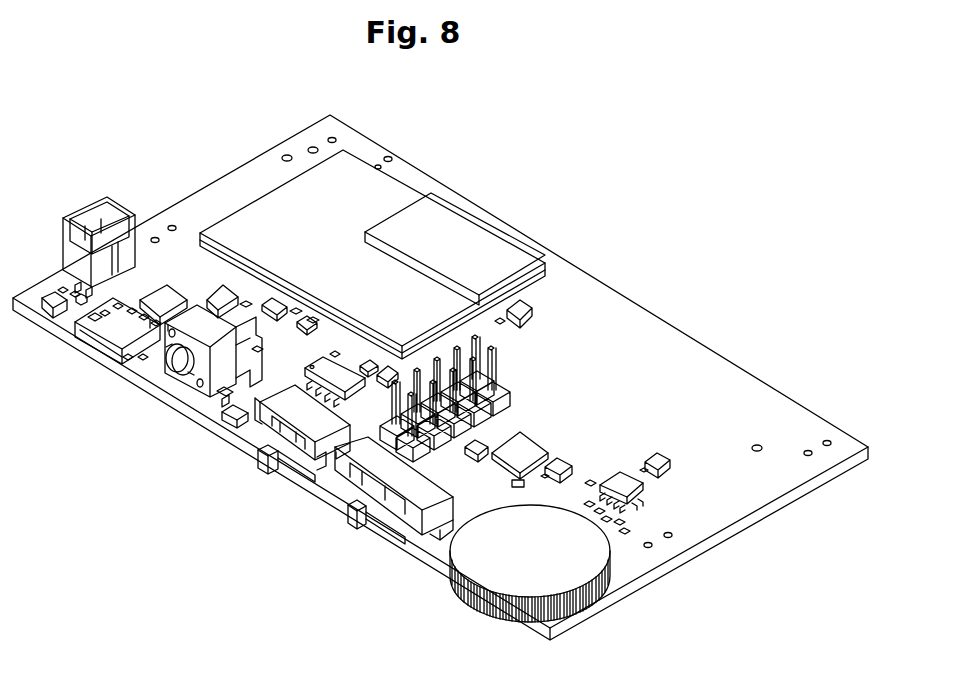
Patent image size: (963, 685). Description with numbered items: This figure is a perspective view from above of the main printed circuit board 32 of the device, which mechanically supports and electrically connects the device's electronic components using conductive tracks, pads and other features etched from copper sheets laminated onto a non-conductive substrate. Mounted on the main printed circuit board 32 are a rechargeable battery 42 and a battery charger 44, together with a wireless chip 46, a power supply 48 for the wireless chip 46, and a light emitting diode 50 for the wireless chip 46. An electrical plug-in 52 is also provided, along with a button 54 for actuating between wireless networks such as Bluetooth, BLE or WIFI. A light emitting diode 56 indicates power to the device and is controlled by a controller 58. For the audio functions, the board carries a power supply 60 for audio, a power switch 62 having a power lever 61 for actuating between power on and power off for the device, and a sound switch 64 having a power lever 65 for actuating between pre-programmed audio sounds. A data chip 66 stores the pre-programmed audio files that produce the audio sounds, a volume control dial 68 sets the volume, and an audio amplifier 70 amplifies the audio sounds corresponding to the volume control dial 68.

The main printed circuit board 32 is at (480, 195).
The rechargeable battery 42 is at (83, 210).
The battery charger 44 is at (175, 293).
The wireless chip 46 is at (292, 188).
The power supply for the wireless chip 48 is at (203, 285).
The light emitting diode for wireless chip 50 is at (43, 308).
The electrical plug-in 52 is at (103, 345).
The button 54 is at (182, 368).
The light emitting diode for indicating power 56 is at (227, 423).
The controller 58 is at (340, 360).
The power supply for audio 60 is at (263, 453).
The power lever 61 is at (271, 484).
The power switch 62 is at (322, 465).
The sound switch 64 is at (386, 538).
The power lever of sound switch 65 is at (352, 522).
The data chip 66 is at (528, 447).
The volume control dial 68 is at (508, 620).
The audio amplifier 70 is at (643, 492).